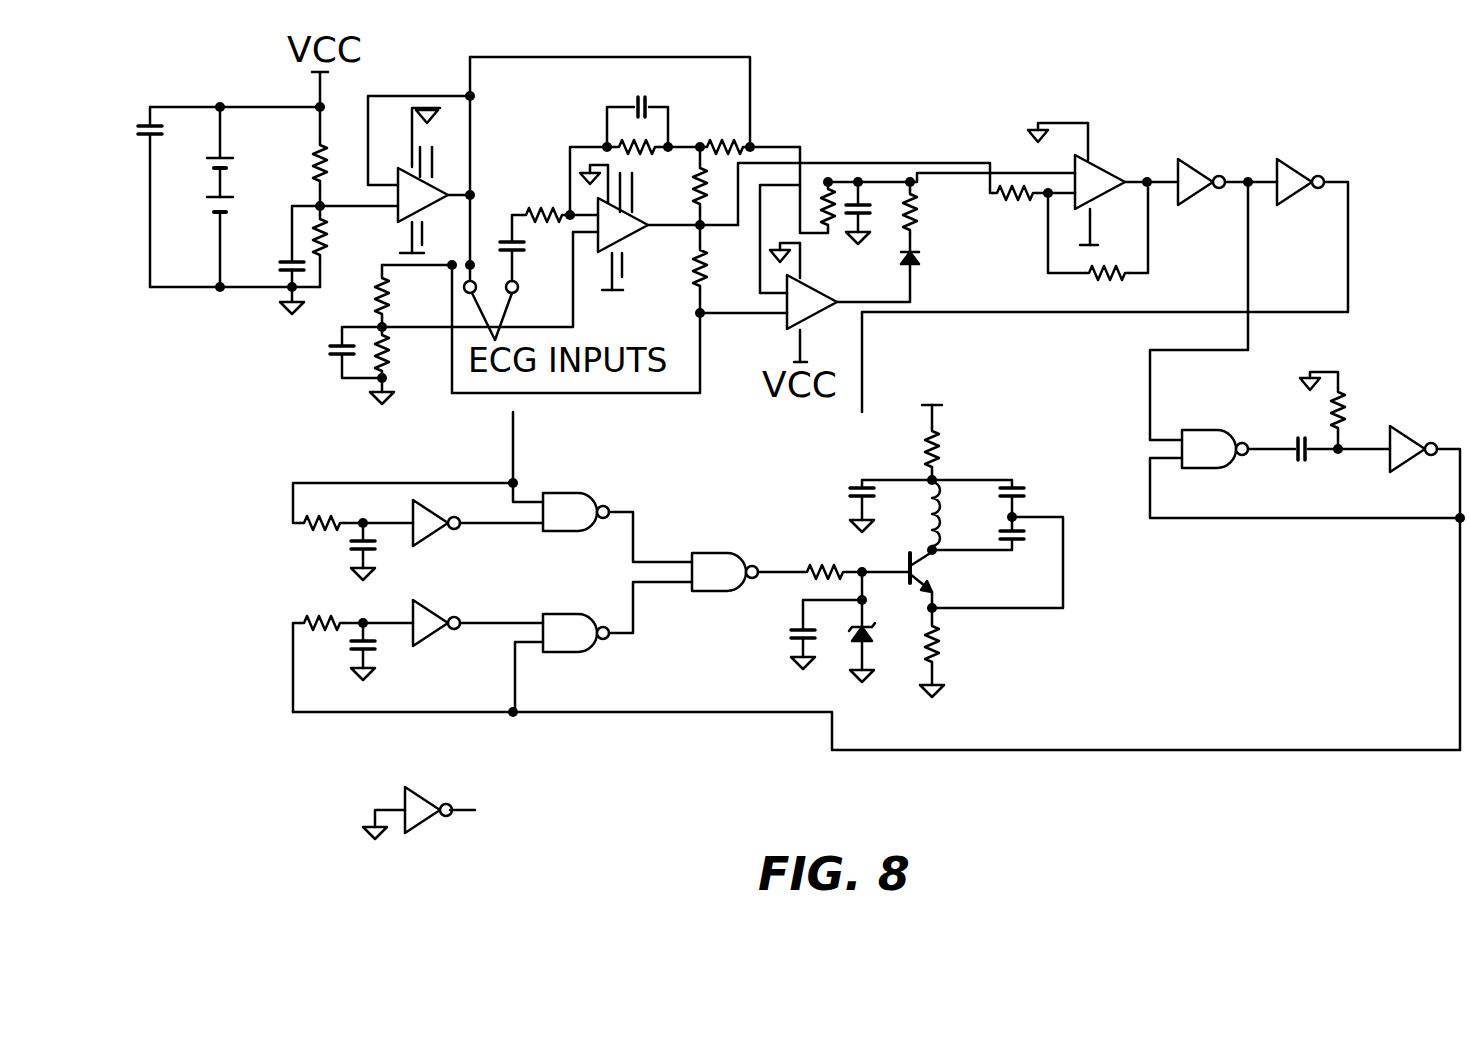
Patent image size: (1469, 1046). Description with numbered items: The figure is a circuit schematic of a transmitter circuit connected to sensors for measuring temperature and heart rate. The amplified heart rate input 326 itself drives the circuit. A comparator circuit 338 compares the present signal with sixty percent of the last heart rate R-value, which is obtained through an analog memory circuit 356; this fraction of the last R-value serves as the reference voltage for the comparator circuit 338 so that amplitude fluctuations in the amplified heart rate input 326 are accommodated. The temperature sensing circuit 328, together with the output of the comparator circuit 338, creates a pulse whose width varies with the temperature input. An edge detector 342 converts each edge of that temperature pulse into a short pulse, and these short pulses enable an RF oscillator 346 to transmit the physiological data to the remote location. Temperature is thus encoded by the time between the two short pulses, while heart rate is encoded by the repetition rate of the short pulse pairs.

The amplified heart rate input 326 is at (558, 178).
The analog memory circuit 356 is at (892, 148).
The comparator circuit 338 is at (1032, 257).
The temperature sensing circuit 328 is at (1287, 421).
The edge detector 342 is at (527, 595).
The RF oscillator 346 is at (1033, 598).